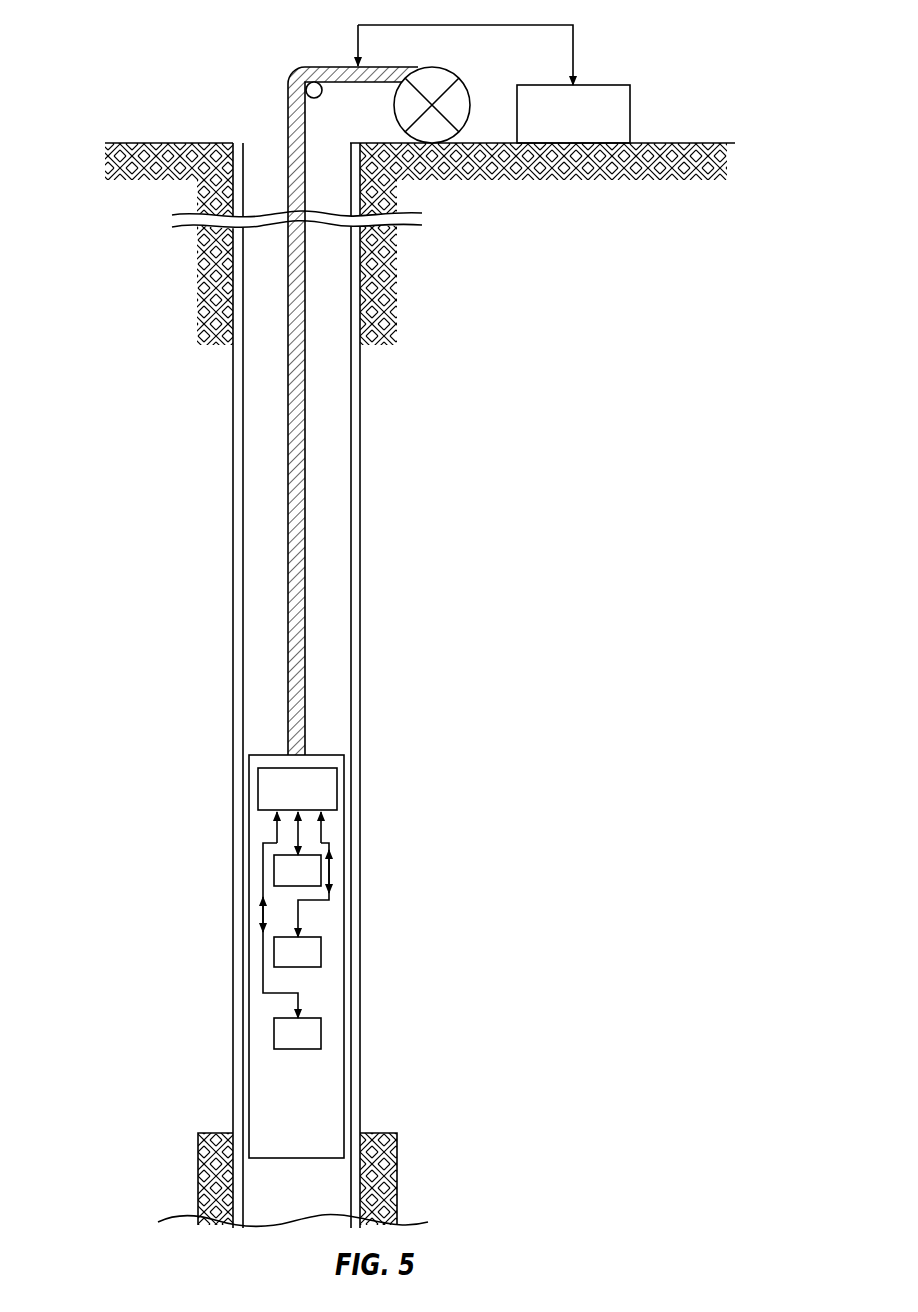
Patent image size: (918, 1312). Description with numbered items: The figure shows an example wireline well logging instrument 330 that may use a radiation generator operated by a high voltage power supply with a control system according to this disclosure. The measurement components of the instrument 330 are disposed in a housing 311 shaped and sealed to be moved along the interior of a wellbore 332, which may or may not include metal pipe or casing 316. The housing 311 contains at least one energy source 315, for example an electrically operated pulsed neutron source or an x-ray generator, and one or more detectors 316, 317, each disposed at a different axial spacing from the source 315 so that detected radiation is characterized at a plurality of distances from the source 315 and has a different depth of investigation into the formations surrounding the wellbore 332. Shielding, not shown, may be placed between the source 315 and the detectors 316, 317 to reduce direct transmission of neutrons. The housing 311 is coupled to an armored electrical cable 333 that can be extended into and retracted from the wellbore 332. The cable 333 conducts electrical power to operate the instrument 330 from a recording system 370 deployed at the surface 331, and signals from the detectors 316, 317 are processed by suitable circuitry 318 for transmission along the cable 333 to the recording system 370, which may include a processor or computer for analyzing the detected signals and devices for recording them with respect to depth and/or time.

The housing 311 is at (249, 1075).
The energy source 315 is at (315, 1033).
The detector 316 is at (236, 622).
The detector 317 is at (282, 868).
The circuitry 318 is at (313, 795).
The well logging instrument 330 is at (268, 753).
The surface 331 is at (158, 143).
The wellbore 332 is at (263, 175).
The armored electrical cable 333 is at (300, 78).
The recording system 370 is at (615, 98).